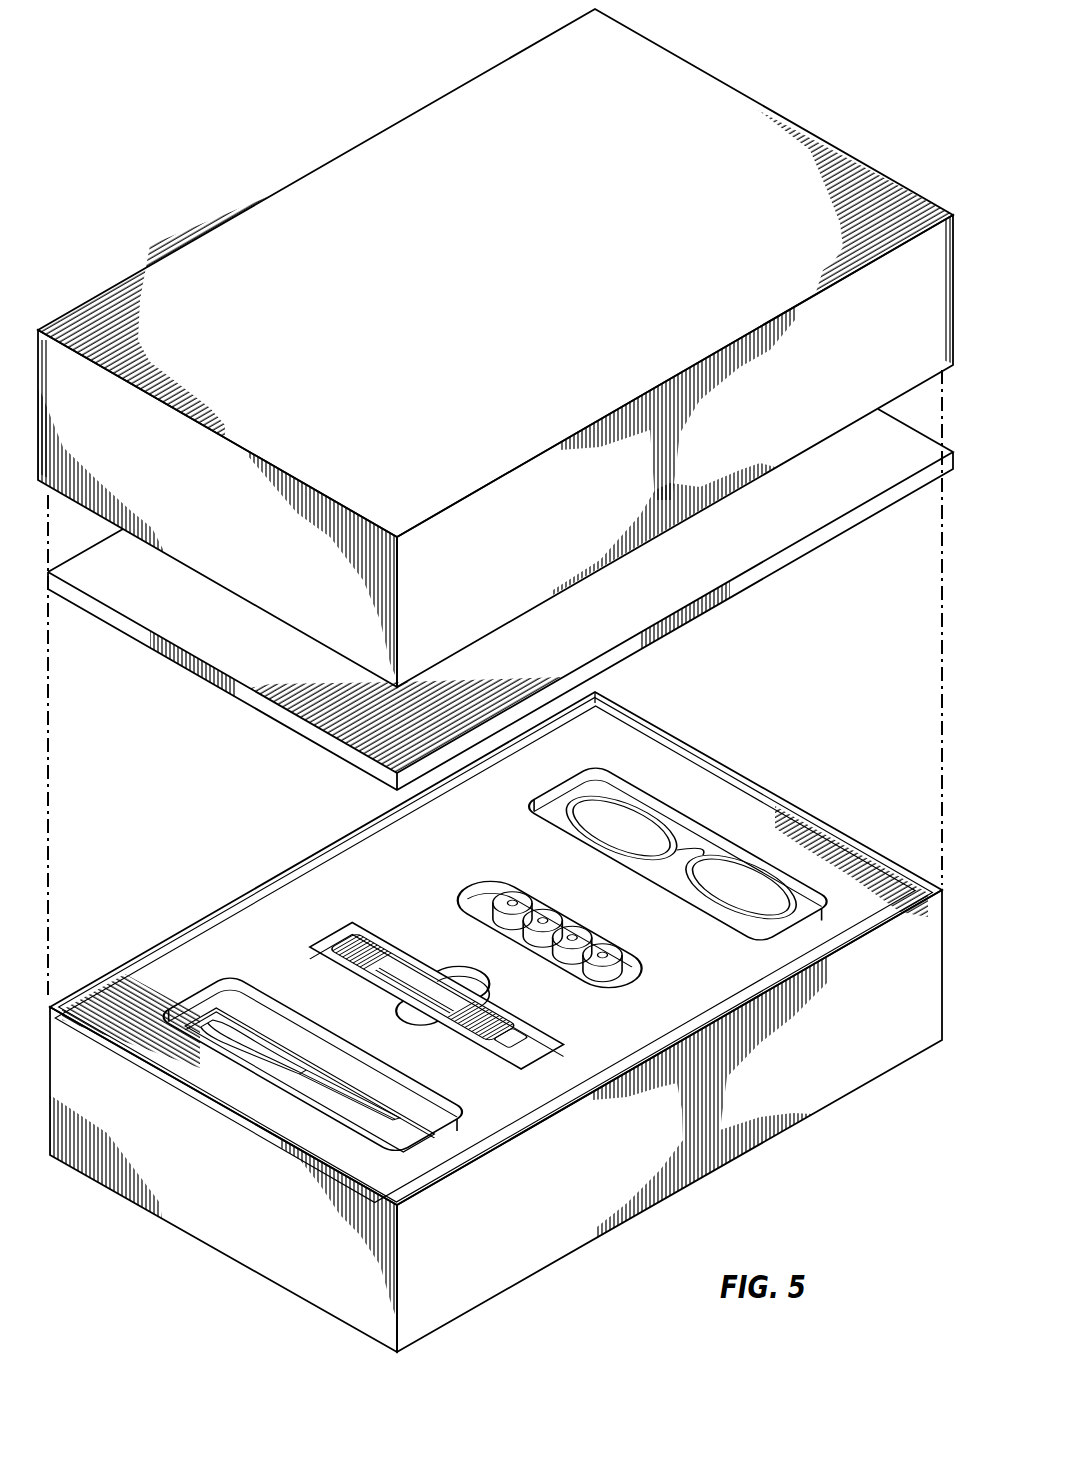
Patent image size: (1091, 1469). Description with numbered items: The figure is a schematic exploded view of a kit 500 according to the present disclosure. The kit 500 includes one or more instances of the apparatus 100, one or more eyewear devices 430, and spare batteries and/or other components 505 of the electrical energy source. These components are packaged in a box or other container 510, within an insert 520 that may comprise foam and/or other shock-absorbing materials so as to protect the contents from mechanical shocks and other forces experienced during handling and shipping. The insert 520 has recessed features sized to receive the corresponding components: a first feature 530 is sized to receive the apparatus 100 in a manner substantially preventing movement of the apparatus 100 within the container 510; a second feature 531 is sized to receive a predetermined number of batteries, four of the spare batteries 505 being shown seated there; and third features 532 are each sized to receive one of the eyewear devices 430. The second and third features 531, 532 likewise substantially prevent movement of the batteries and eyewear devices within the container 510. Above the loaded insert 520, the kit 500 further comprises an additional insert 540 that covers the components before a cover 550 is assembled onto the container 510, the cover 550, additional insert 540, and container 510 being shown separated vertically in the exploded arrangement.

The kit 500 is at (130, 50).
The cover 550 is at (530, 285).
The additional insert 540 is at (268, 705).
The container 510 is at (548, 1220).
The insert 520 is at (642, 1037).
The third features 532 is at (702, 822).
The second feature 531 is at (500, 876).
The first feature 530 is at (390, 944).
The spare batteries and/or other components 505 is at (538, 943).
The eyewear device 430 is at (720, 907).
The apparatus 100 is at (334, 940).